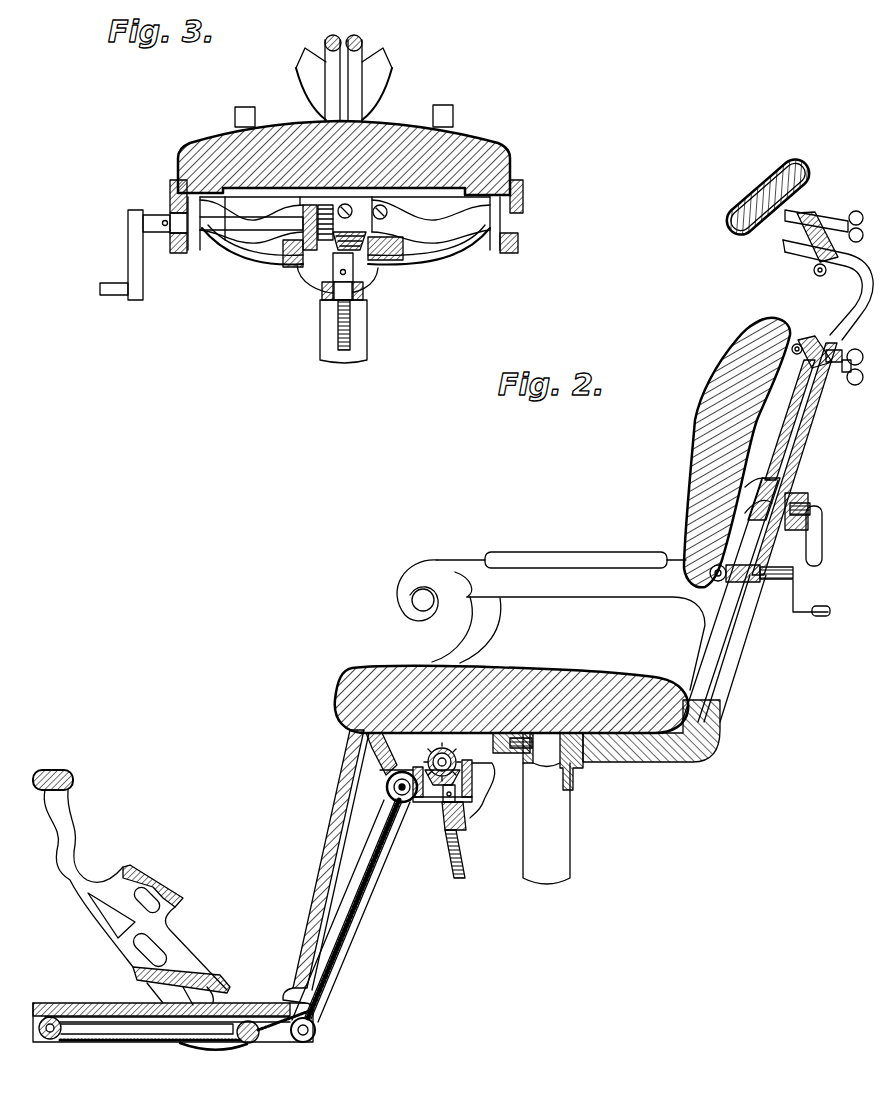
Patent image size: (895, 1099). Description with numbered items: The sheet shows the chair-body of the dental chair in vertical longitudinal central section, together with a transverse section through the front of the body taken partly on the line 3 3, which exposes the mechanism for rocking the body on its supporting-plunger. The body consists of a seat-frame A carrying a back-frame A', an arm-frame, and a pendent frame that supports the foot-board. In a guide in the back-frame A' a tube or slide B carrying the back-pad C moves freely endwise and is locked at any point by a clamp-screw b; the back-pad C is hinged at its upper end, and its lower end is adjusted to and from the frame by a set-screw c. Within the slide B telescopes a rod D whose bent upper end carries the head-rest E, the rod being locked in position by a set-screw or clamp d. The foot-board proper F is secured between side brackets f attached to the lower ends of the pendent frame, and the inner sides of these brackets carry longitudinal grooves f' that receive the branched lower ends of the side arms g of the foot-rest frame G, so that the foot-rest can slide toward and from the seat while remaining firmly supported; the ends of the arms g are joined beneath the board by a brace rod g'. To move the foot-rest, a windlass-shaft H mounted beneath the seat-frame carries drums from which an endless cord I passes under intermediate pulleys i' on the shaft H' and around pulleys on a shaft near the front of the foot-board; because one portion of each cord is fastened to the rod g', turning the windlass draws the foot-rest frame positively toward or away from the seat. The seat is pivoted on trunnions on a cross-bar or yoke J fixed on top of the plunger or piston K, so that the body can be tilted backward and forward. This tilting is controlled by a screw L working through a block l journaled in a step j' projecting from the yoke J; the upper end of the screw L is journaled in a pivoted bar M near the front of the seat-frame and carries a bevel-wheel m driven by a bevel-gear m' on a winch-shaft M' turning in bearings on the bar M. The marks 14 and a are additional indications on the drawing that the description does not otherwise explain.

In FIG. 3, the seat-frame A is at (345, 214).
In FIG. 2, the seat-frame A is at (540, 744).
In FIG. 3, the back-frame A' is at (361, 78).
In FIG. 2, the back-frame A' is at (748, 541).
In FIG. 2, the tube, section, or slide B is at (817, 423).
In FIG. 2, the back-pad C is at (732, 453).
In FIG. 2, the telescoping rod D is at (828, 333).
In FIG. 2, the set-screw or clamp d is at (844, 356).
In FIG. 2, the head-rest E is at (768, 197).
In FIG. 2, the clamp-screw b is at (806, 528).
In FIG. 2, the set-screw c is at (770, 590).
In FIG. 2, the foot-board proper F is at (125, 1008).
In FIG. 2, the foot-rest frame G is at (131, 887).
In FIG. 2, the windlass-shaft H is at (364, 780).
In FIG. 2, the pulley-shaft H' is at (321, 1030).
In FIG. 2, the endless cord I is at (358, 905).
In FIG. 3, the cross-bar or yoke J is at (280, 203).
In FIG. 2, the cross-bar or yoke J is at (580, 766).
In FIG. 3, the step j' is at (359, 293).
In FIG. 2, the step j' is at (467, 816).
In FIG. 3, the plunger or piston K is at (362, 348).
In FIG. 2, the plunger or piston K is at (562, 840).
In FIG. 3, the screw L is at (352, 328).
In FIG. 2, the screw L is at (458, 848).
In FIG. 3, the block l is at (340, 290).
In FIG. 2, the block l is at (443, 806).
In FIG. 3, the pivoted bar M is at (338, 253).
In FIG. 2, the pivoted bar M is at (442, 789).
In FIG. 2, the winch-shaft M' is at (511, 699).
In FIG. 3, the bevel-wheel m is at (322, 263).
In FIG. 2, the bevel-wheel m is at (436, 795).
In FIG. 3, the bevel-gear m' is at (318, 206).
In FIG. 2, the bevel-gear m' is at (429, 760).
In FIG. 2, the side bars or brackets f is at (37, 1043).
In FIG. 2, the longitudinal grooves f' is at (147, 1045).
In FIG. 2, the side arms or supports g is at (213, 1059).
In FIG. 2, the brace rod or bar g' is at (186, 1041).
In FIG. 2, the intermediate pulleys i' is at (303, 1045).
In FIG. 2, the guide 14 is at (393, 733).
In FIG. 2, the seat bracket a is at (440, 733).
In FIG. 2, the section line 3 is at (452, 848).